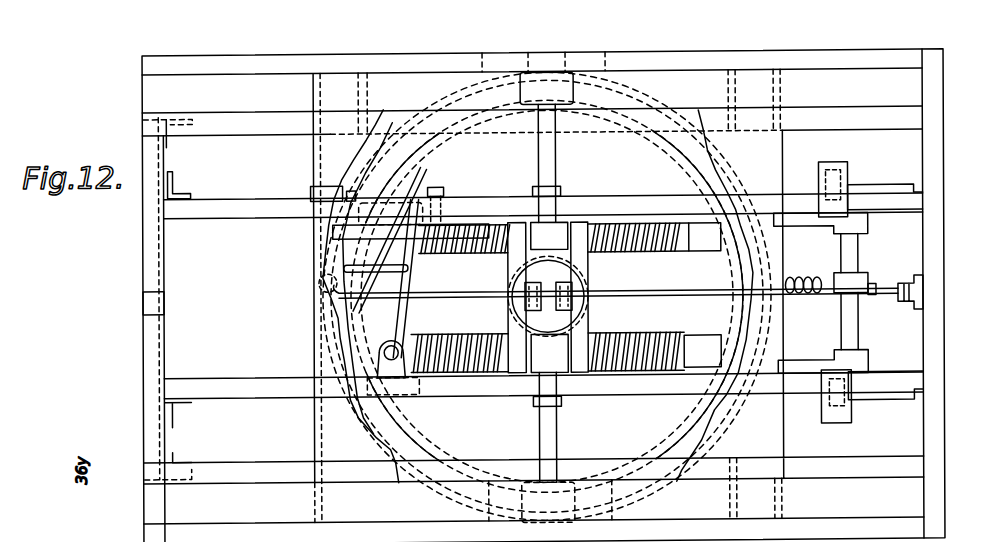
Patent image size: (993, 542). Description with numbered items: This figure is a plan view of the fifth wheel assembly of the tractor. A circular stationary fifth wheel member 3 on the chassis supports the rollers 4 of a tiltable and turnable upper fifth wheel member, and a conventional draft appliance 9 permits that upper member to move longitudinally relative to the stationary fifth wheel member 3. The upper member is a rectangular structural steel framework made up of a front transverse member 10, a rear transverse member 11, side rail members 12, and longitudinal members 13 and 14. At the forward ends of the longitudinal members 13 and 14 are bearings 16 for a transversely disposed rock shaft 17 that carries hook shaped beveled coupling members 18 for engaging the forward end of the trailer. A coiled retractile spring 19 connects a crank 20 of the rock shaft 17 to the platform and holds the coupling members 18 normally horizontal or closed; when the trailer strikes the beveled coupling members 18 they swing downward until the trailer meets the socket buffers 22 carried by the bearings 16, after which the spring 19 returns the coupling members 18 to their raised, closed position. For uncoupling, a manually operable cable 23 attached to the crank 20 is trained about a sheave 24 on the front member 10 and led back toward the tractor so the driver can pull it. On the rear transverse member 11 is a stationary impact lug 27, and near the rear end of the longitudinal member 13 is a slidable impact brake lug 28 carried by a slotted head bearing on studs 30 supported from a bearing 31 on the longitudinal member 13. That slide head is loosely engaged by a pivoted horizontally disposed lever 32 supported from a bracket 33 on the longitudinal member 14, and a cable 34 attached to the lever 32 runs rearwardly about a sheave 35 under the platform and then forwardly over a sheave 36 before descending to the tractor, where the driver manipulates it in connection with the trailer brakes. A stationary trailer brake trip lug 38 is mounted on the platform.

The circular stationary fifth wheel member 3 is at (676, 164).
The rollers 4 is at (574, 99).
The draft appliance 9 is at (618, 257).
The front transverse member 10 is at (943, 320).
The rear transverse member 11 is at (142, 351).
The side rail members 12 is at (533, 286).
The longitudinal member 13 is at (258, 219).
The longitudinal member 14 is at (268, 379).
The bearings 16 is at (886, 191).
The rock shaft 17 is at (857, 253).
The coupling members 18 is at (792, 219).
The coiled retractile spring 19 is at (805, 283).
The crank 20 is at (867, 286).
The socket buffers 22 is at (832, 170).
The cable 23 is at (870, 301).
The sheave 24 is at (908, 316).
The stationary impact lug 27 is at (165, 303).
The slidable impact brake lug 28 is at (408, 205).
The studs 30 is at (440, 190).
The bearing 31 is at (468, 227).
The lever 32 is at (409, 293).
The bracket 33 is at (398, 365).
The cable 34 is at (396, 275).
The sheave 35 is at (323, 288).
The sheave 36 is at (520, 292).
The stationary trailer brake trip lug 38 is at (310, 193).